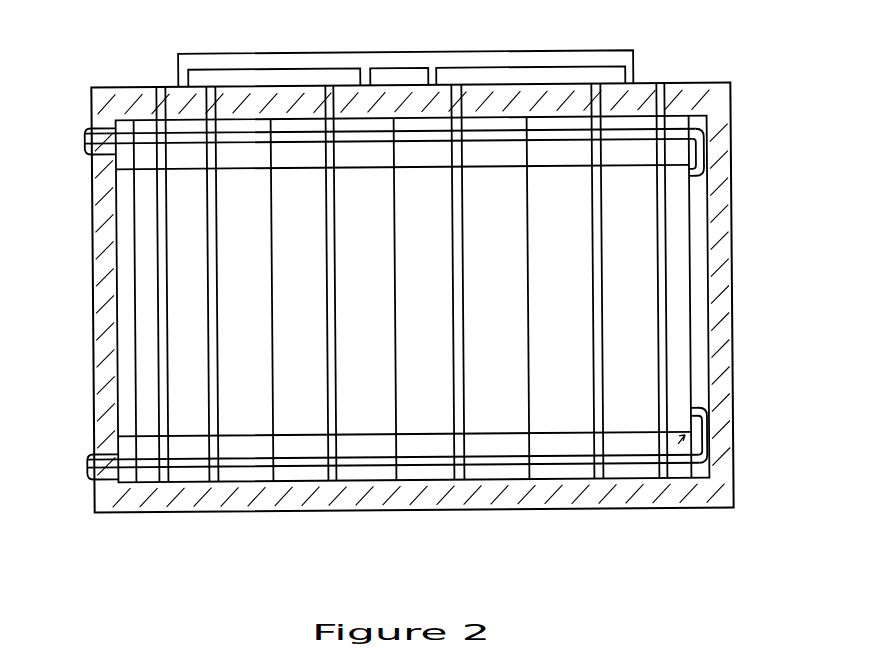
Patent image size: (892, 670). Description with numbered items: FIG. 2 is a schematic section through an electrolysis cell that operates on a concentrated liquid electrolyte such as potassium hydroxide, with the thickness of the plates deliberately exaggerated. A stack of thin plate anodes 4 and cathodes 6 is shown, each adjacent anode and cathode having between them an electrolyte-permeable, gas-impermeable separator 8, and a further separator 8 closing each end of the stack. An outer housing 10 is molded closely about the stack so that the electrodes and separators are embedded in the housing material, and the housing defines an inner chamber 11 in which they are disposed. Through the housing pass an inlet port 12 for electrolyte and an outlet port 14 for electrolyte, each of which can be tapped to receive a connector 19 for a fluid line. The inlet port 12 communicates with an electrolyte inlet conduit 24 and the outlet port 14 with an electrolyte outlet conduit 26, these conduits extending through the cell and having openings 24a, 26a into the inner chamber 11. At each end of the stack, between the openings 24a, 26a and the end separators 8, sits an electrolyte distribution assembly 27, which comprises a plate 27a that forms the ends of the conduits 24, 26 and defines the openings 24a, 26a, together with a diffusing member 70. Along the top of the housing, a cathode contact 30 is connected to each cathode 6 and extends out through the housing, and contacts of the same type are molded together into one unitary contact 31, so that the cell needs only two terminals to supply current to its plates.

The anode 4 is at (235, 440).
The cathode 6 is at (180, 490).
The separator 8 is at (163, 85).
The outer housing 10 is at (747, 280).
The inner chamber 11 is at (640, 160).
The inlet port 12 is at (88, 455).
The outlet port 14 is at (88, 136).
The connector 19 is at (90, 128).
The electrolyte inlet conduit 24 is at (90, 485).
The opening 24a is at (700, 405).
The electrolyte outlet conduit 26 is at (560, 133).
The opening 26a is at (687, 178).
The electrolyte distribution assembly 27 is at (148, 488).
The plate 27a is at (125, 315).
The cathode contact 30 is at (180, 52).
The unitary contact 31 is at (282, 62).
The diffusing member 70 is at (145, 275).